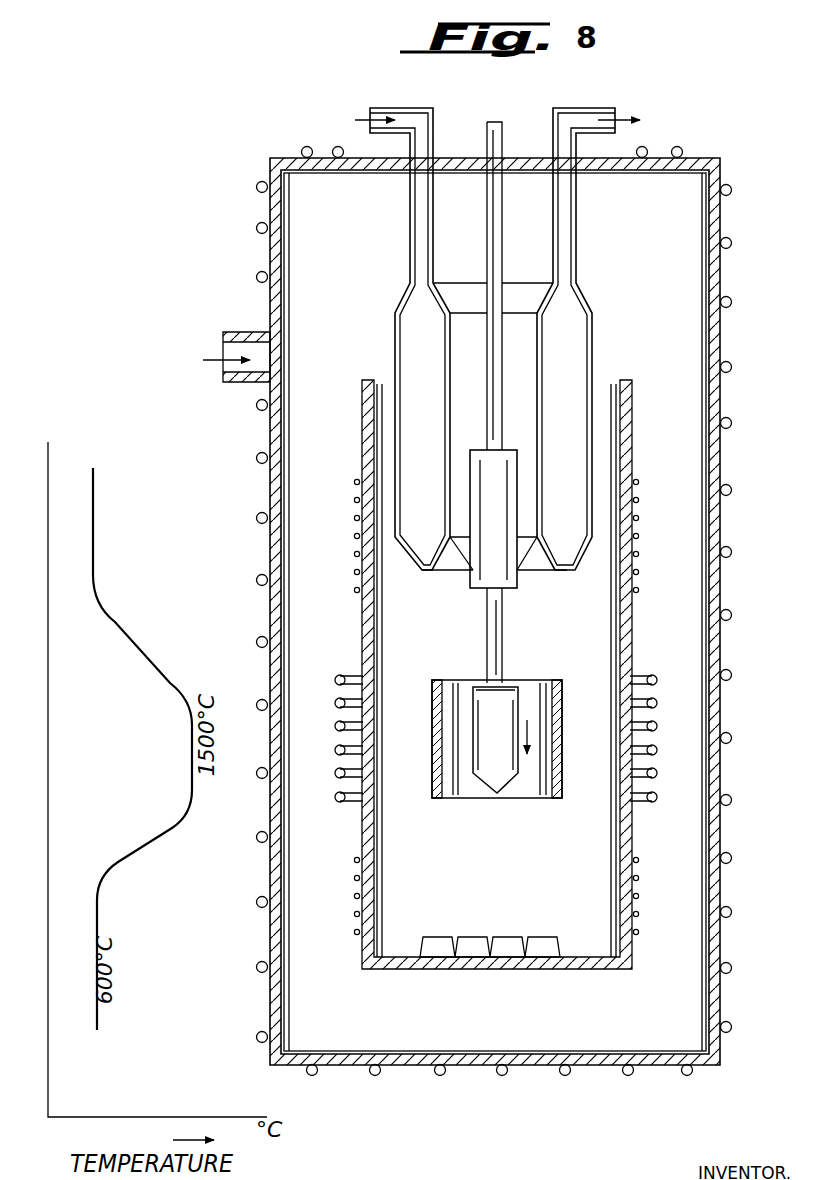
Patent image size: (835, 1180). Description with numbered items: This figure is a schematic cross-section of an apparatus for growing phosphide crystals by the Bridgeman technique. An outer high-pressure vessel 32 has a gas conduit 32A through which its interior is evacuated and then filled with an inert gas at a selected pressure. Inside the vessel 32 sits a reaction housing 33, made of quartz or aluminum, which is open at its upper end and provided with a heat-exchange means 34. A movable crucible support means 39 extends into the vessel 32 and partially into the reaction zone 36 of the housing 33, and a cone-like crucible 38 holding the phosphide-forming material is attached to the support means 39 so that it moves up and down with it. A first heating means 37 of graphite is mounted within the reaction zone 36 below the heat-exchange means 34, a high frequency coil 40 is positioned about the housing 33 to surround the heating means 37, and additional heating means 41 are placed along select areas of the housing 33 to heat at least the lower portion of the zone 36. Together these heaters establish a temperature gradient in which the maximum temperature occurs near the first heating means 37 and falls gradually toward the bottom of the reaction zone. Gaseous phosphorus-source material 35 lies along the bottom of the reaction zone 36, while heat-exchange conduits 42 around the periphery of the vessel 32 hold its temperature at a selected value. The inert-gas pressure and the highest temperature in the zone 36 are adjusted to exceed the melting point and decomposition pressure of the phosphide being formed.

The outer high-pressure vessel 32 is at (716, 520).
The gas conduit 32A is at (247, 378).
The reaction housing 33 is at (628, 633).
The heat-exchange means 34 is at (592, 365).
The gaseous phosphorus-source material 35 is at (517, 955).
The reaction zone 36 is at (540, 806).
The first heating means 37 is at (557, 680).
The crucible 38 is at (504, 790).
The movable crucible support means 39 is at (519, 580).
The high frequency coil 40 is at (334, 797).
The additional heating means 41 is at (639, 513).
The heat-exchange conduits 42 is at (733, 740).